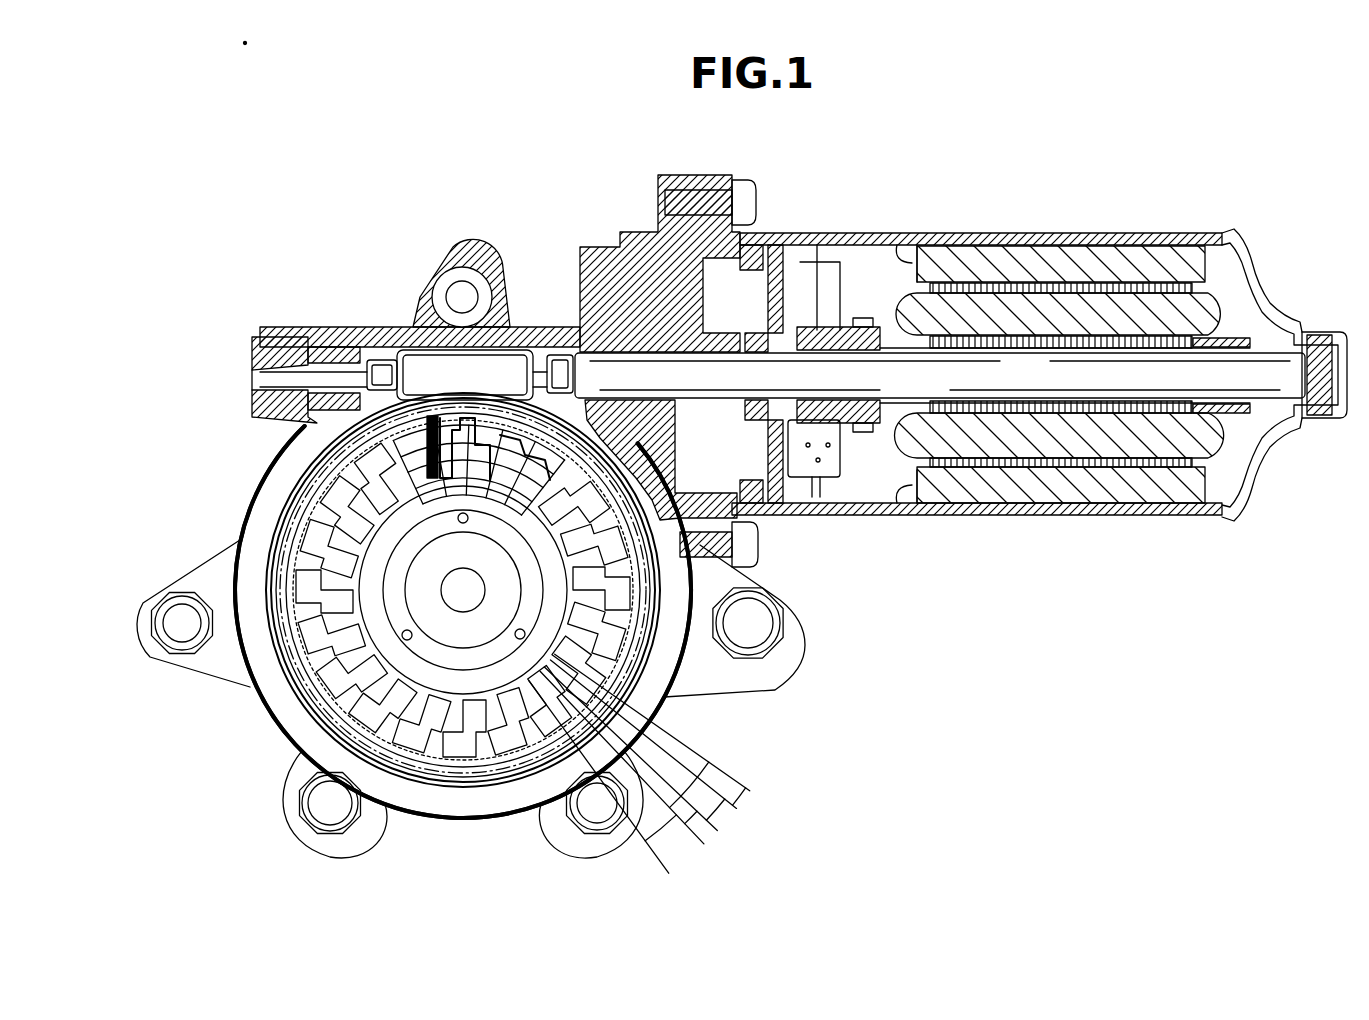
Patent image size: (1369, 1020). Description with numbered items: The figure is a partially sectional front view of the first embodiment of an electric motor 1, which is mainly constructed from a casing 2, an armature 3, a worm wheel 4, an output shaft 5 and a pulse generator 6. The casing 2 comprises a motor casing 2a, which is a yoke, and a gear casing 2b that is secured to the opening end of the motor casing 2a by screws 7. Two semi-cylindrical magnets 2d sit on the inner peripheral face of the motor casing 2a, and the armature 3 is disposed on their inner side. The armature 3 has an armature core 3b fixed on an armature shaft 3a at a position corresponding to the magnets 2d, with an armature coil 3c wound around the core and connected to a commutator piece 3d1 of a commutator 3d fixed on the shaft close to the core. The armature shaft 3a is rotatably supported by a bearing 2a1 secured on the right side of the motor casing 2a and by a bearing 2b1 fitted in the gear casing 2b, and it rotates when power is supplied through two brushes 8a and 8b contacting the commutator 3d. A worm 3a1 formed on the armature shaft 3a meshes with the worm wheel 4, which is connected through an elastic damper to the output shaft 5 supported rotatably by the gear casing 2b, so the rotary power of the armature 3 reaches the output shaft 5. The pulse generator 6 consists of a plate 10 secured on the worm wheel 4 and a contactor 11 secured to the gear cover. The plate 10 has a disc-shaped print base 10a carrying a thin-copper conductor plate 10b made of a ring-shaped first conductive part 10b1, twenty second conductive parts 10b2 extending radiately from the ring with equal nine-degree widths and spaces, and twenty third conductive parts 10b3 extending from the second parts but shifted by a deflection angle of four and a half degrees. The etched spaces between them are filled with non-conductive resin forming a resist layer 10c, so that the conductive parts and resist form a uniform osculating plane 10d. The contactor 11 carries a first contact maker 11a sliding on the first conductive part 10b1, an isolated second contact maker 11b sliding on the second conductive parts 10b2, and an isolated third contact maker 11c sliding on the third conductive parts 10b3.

The electric motor 1 is at (398, 152).
The casing 2 is at (742, 503).
The motor casing 2a is at (1110, 233).
The bearing 2a1 is at (1288, 425).
The gear casing 2b is at (300, 756).
The bearing 2b1 is at (605, 327).
The magnet 2d is at (914, 233).
The armature 3 is at (1240, 300).
The armature shaft 3a is at (1298, 355).
The worm 3a1 is at (400, 355).
The armature core 3b is at (1180, 470).
The armature coil 3c is at (1243, 480).
The commutator 3d is at (905, 480).
The commutator piece 3d1 is at (857, 325).
The worm wheel 4 is at (440, 770).
The output shaft 5 is at (330, 690).
The pulse generator 6 is at (485, 559).
The screw 7 is at (746, 190).
The brush 8a is at (830, 460).
The brush 8b is at (814, 371).
The plate 10 is at (315, 515).
The print base 10a is at (327, 657).
The conductor plate 10b is at (313, 560).
The first conductive part 10b1 is at (468, 700).
The second conductive part 10b2 is at (493, 720).
The third conductive part 10b3 is at (545, 725).
The resist layer 10c is at (403, 742).
The osculating plane 10d is at (315, 613).
The contactor 11 is at (430, 445).
The first contact maker 11a is at (440, 415).
The second contact maker 11b is at (462, 478).
The third contact maker 11c is at (548, 448).